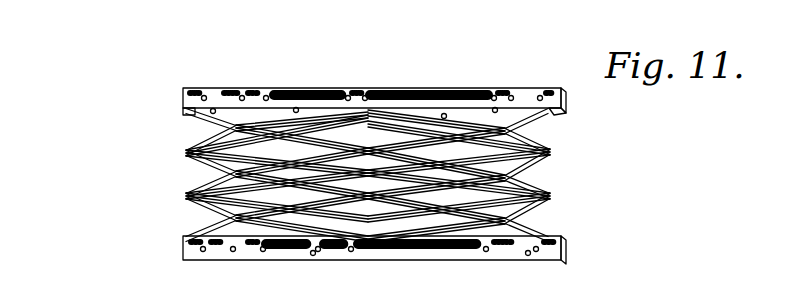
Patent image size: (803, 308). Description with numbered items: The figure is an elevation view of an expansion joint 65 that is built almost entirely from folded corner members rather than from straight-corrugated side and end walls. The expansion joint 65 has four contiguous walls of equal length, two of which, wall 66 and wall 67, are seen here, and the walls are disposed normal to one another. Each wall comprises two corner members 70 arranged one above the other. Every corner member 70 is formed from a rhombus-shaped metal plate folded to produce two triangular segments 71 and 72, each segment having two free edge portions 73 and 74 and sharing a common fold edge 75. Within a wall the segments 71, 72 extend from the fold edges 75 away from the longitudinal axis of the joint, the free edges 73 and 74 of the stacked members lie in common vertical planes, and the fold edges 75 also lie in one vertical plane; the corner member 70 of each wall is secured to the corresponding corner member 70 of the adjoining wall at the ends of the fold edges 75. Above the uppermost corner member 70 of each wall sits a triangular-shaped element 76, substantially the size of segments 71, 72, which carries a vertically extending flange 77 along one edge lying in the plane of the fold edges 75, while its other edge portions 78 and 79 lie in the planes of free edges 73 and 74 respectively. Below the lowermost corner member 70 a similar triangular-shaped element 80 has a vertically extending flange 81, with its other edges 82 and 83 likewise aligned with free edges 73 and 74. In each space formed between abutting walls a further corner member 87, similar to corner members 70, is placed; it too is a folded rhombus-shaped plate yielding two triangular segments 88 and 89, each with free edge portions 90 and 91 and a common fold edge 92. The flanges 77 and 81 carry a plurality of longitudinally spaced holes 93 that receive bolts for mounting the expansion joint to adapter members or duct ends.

The expansion joint 65 is at (134, 67).
The wall 66 is at (481, 77).
The wall 67 is at (248, 76).
The corner member 70 is at (192, 168).
The triangular segment 71 is at (535, 134).
The triangular segment 72 is at (525, 160).
The free edge portion 73 is at (205, 195).
The free edge portion 74 is at (520, 210).
The fold edge 75 is at (210, 152).
The triangular-shaped element 76 is at (290, 99).
The flange 77 is at (186, 80).
The edge portion 78 is at (203, 100).
The edge portion 79 is at (300, 103).
The triangular-shaped element 80 is at (245, 229).
The flange 81 is at (305, 254).
The edge 82 is at (457, 223).
The edge 83 is at (531, 253).
The corner member 87 is at (373, 107).
The triangular segment 88 is at (389, 110).
The triangular segment 89 is at (388, 202).
The free edge portion 90 is at (225, 121).
The free edge portion 91 is at (267, 128).
The fold edge 92 is at (331, 123).
The hole 93 is at (220, 253).